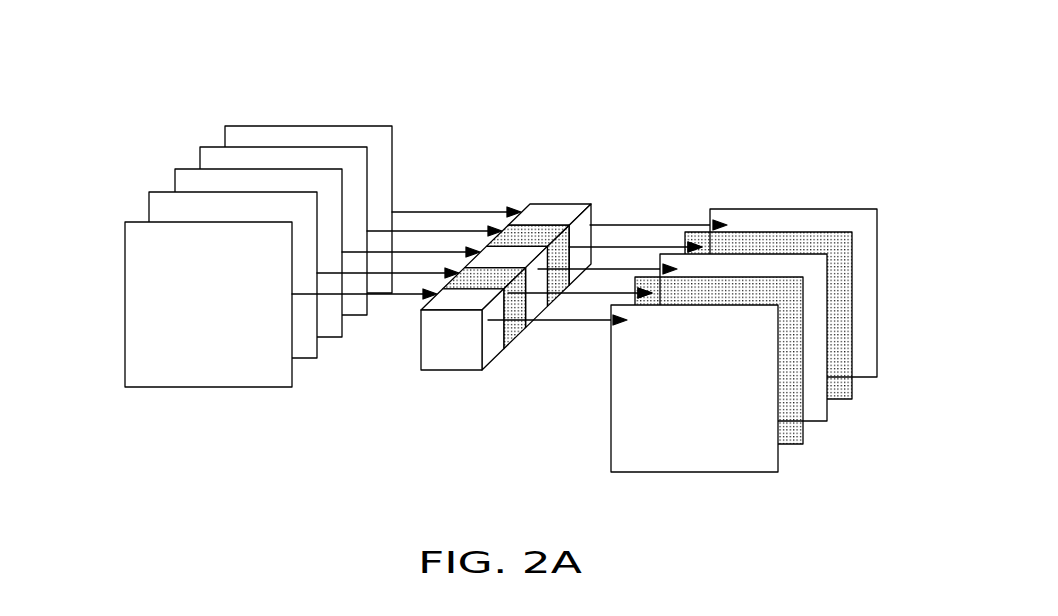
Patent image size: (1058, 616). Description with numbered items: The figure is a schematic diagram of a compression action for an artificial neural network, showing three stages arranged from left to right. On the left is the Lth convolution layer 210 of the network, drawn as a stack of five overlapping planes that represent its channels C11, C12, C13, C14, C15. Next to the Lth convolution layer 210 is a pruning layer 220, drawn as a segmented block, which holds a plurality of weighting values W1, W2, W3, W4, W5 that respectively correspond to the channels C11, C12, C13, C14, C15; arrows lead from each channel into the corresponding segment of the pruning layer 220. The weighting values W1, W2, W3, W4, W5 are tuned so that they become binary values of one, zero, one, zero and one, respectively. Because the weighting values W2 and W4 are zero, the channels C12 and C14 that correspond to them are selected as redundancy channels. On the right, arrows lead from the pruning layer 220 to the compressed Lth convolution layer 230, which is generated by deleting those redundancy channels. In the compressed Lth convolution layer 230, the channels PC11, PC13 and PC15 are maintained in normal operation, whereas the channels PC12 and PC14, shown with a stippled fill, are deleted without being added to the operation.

The Lth convolution layer 210 is at (218, 199).
The pruning layer 220 is at (496, 230).
The compressed Lth convolution layer 230 is at (785, 293).
The channel C11 is at (225, 135).
The channel C12 is at (200, 160).
The channel C13 is at (175, 180).
The channel C14 is at (149, 205).
The channel C15 is at (125, 248).
The weighting value W1 is at (573, 210).
The weighting value W2 is at (542, 230).
The weighting value W3 is at (537, 310).
The weighting value W4 is at (512, 350).
The weighting value W5 is at (435, 357).
The channel PC11 is at (877, 296).
The channel PC12 is at (853, 387).
The channel PC13 is at (827, 407).
The channel PC14 is at (803, 432).
The channel PC15 is at (778, 458).